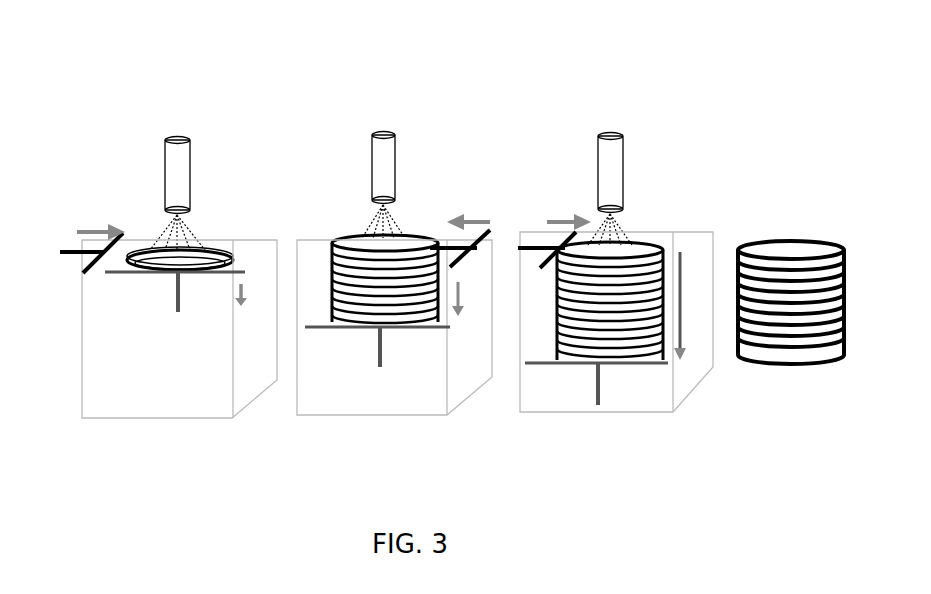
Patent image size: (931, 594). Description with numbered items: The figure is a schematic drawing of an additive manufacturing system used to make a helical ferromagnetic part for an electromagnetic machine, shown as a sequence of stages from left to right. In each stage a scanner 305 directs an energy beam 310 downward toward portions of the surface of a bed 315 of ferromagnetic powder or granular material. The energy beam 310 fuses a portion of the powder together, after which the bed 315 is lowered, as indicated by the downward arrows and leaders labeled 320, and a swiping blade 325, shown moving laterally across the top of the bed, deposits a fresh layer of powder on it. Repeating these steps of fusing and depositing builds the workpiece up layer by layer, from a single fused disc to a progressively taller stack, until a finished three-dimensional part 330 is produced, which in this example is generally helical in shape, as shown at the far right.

The scanner 305 is at (178, 130).
The energy beam 310 is at (201, 236).
The bed 315 is at (261, 236).
The platform lowering direction 320 is at (250, 281).
The swiping blade 325 is at (68, 238).
The three-dimensional part 330 is at (785, 238).